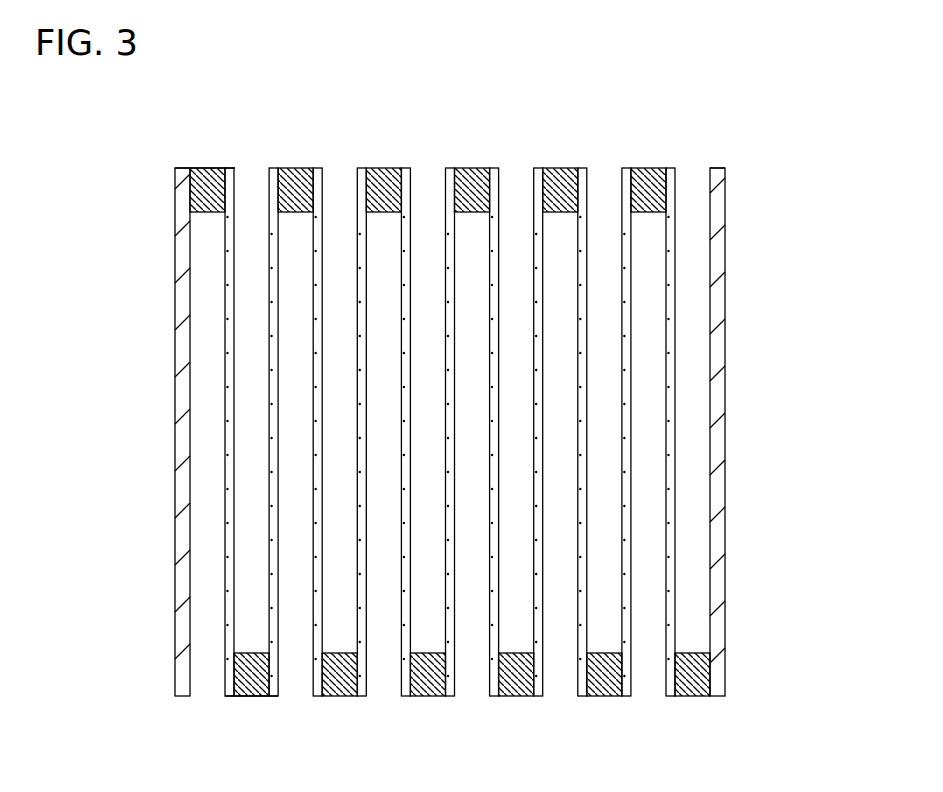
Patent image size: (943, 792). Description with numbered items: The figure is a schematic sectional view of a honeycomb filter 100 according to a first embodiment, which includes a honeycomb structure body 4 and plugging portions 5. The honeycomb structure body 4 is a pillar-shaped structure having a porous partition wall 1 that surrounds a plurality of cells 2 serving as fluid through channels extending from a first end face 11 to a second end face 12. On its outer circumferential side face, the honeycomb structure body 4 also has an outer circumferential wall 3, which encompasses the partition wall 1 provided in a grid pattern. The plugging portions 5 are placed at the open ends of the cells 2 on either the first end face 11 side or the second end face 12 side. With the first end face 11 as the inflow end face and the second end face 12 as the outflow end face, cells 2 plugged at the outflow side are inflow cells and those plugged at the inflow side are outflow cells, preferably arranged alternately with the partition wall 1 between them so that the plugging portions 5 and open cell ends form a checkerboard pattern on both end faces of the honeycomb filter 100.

The honeycomb filter 100 is at (808, 42).
The partition wall 1 is at (578, 183).
The cells 2 is at (511, 232).
The outer circumferential wall 3 is at (186, 322).
The honeycomb structure body 4 is at (733, 175).
The plugging portions 5 is at (221, 188).
The first end face 11 is at (193, 146).
The second end face 12 is at (211, 718).